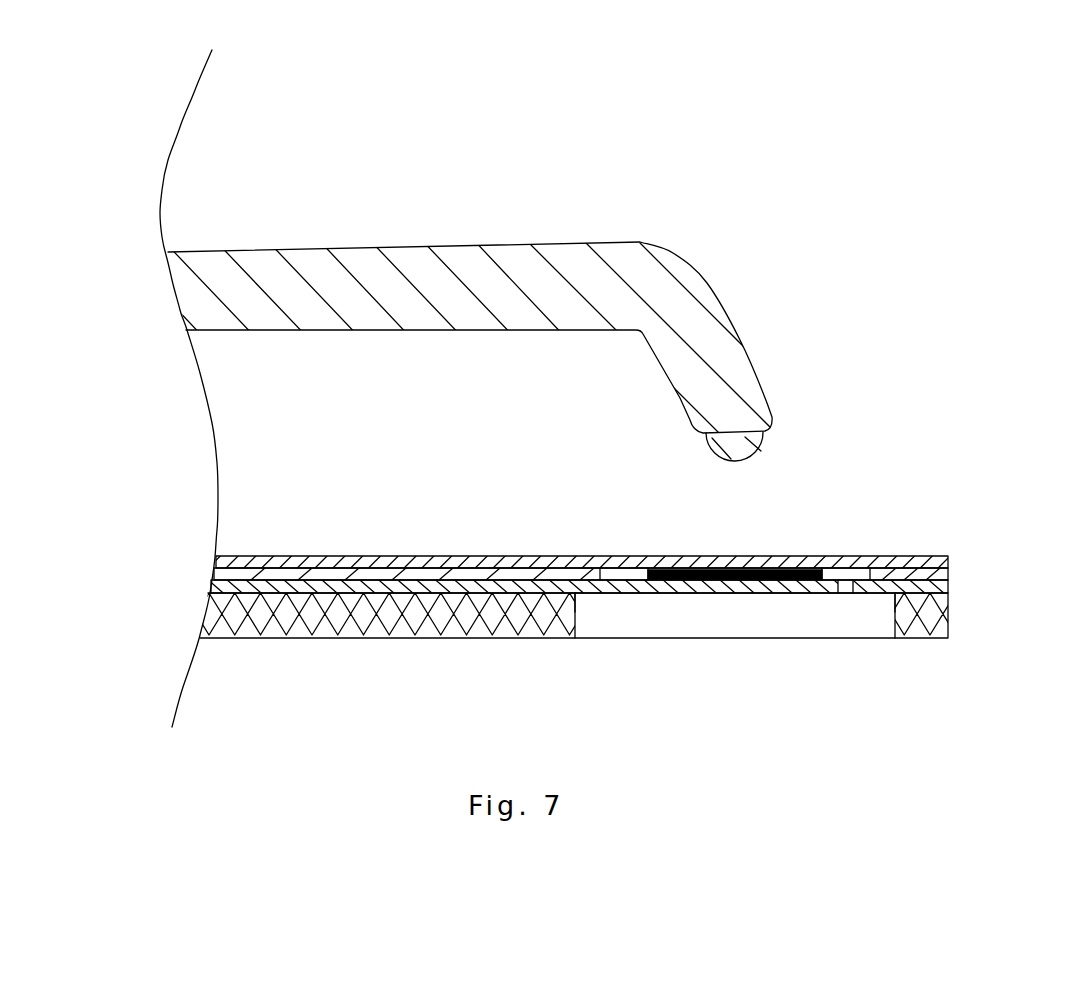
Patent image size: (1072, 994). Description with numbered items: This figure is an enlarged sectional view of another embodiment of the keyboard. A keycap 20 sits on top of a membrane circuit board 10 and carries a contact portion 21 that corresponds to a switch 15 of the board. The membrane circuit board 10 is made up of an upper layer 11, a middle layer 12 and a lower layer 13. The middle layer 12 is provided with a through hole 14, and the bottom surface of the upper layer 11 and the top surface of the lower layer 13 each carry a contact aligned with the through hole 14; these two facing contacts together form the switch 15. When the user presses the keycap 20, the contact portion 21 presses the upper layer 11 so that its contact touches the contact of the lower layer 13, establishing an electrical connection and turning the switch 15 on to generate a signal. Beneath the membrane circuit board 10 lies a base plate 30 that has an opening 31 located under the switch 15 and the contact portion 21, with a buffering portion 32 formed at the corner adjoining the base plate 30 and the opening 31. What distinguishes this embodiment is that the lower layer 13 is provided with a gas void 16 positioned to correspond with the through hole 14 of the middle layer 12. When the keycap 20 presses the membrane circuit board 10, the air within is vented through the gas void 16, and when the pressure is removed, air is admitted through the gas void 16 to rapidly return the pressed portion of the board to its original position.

The membrane circuit board 10 is at (621, 584).
The upper layer 11 is at (948, 558).
The middle layer 12 is at (624, 593).
The lower layer 13 is at (621, 638).
The through hole 14 is at (622, 573).
The switch 15 is at (660, 568).
The gas void 16 is at (845, 588).
The keycap 20 is at (666, 284).
The contact portion 21 is at (756, 437).
The base plate 30 is at (556, 644).
The opening 31 is at (693, 622).
The buffering portion 32 is at (577, 596).